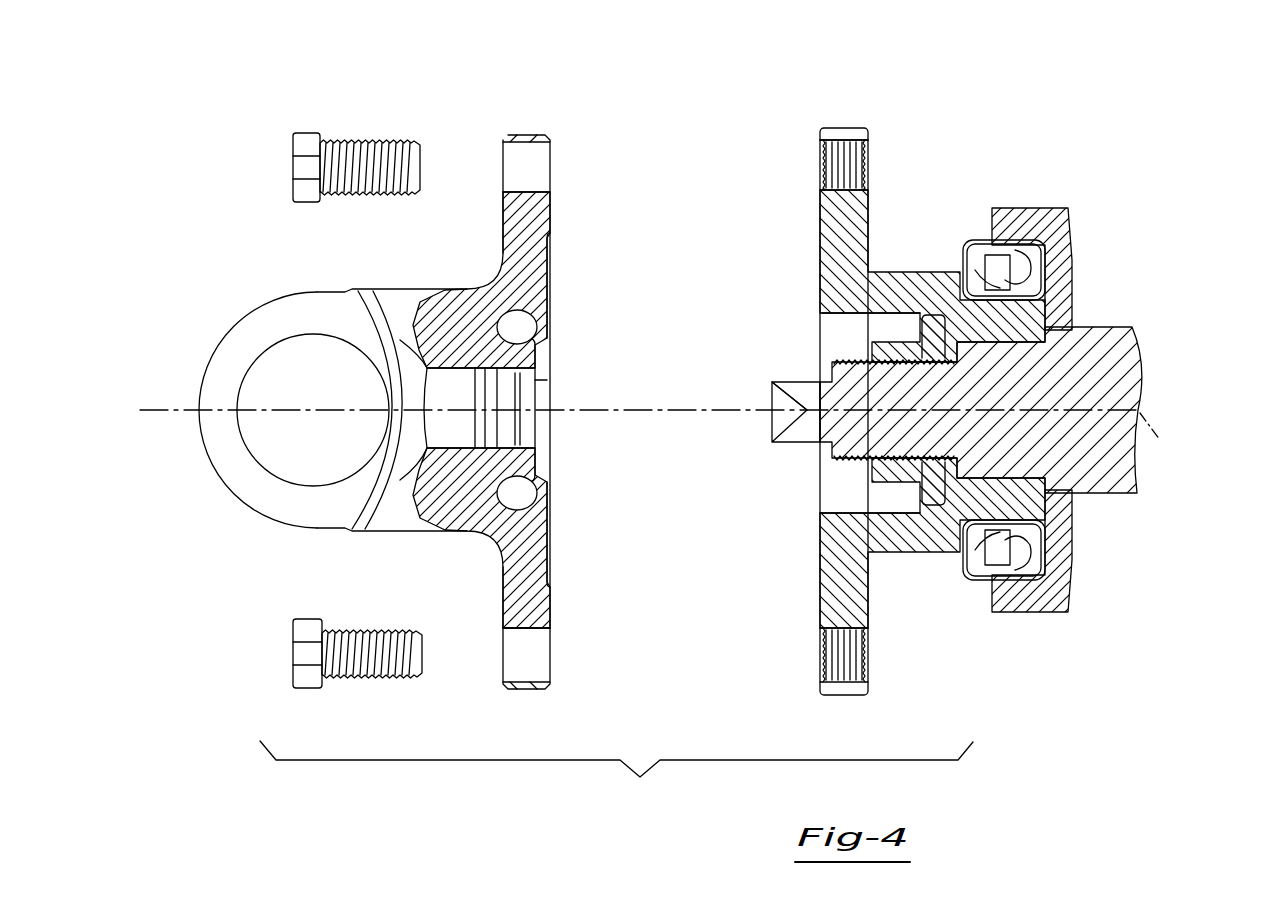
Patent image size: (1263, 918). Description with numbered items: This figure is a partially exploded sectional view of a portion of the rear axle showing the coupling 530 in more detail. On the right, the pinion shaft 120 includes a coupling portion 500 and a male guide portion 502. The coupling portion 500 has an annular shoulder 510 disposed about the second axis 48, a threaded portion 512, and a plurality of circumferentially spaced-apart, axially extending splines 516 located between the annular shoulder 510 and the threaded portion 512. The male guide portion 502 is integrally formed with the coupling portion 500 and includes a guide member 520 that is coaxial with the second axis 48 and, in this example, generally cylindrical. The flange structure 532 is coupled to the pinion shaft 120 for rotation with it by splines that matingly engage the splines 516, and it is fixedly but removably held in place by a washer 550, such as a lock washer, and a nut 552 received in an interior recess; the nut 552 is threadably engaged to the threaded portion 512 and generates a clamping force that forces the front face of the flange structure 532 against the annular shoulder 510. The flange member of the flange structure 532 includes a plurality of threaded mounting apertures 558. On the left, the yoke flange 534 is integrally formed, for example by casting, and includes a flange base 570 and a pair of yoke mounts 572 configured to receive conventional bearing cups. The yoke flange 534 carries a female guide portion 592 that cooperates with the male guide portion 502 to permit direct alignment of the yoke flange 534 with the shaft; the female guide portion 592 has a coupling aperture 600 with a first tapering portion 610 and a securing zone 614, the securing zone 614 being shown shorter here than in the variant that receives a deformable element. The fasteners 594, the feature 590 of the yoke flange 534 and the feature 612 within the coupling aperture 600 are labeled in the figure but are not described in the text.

The second axis 48 is at (1160, 440).
The pinion shaft 120 is at (1113, 342).
The coupling portion 500 is at (1110, 370).
The male guide portion 502 is at (800, 437).
The annular shoulder 510 is at (1073, 490).
The threaded portion 512 is at (853, 458).
The splines 516 is at (1050, 313).
The guide member 520 is at (787, 382).
The coupling assembly 530 is at (616, 776).
The flange structure 532 is at (830, 708).
The yoke flange 534 is at (528, 118).
The washer 550 is at (930, 330).
The nut 552 is at (897, 350).
The threaded mounting apertures 558 is at (843, 660).
The flange base 570 is at (533, 227).
The yoke mounts 572 is at (262, 325).
The bolt hole 590 is at (535, 628).
The female guide portion 592 is at (510, 306).
The bolt 594 is at (343, 143).
The coupling aperture 600 is at (438, 390).
The first tapering portion 610 is at (540, 387).
The spline 612 is at (470, 430).
The securing zone 614 is at (517, 430).